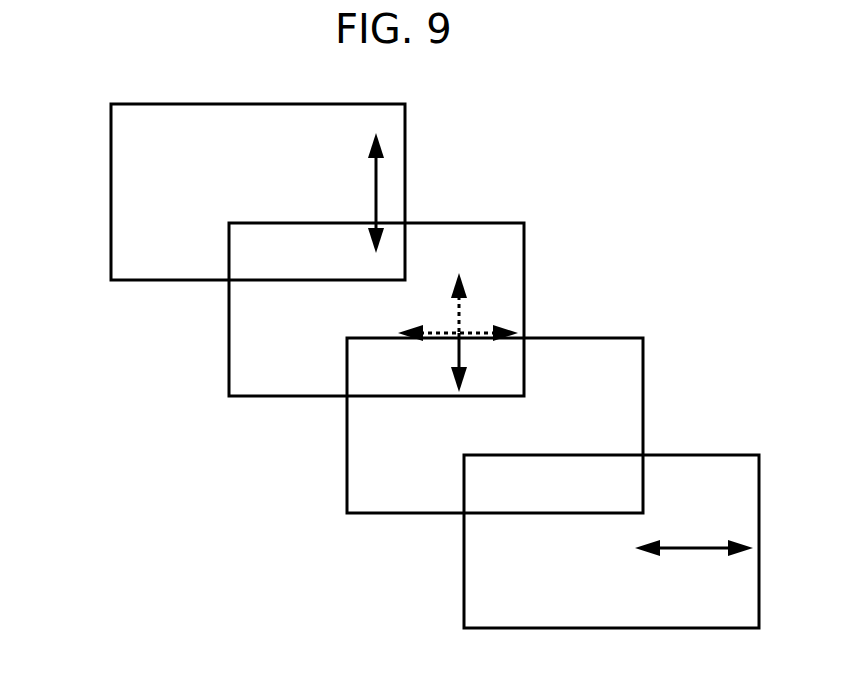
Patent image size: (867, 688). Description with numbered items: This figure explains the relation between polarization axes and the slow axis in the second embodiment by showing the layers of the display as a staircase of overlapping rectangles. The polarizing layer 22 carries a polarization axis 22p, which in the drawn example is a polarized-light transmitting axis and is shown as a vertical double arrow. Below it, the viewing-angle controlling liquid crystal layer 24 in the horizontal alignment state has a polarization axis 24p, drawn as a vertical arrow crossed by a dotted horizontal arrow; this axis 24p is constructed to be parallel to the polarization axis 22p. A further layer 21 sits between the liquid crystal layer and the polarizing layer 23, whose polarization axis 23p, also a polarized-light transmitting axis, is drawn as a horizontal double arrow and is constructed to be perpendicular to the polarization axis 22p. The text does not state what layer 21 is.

The polarizing layer 22 is at (110, 246).
The polarization axis 22p is at (376, 200).
The viewing-angle controlling liquid crystal layer 24 is at (229, 362).
The polarization axis of the viewing-angle controlling liquid crystal layer 24p is at (459, 350).
The first lens group 21 is at (347, 479).
The polarizing layer 23 is at (464, 595).
The polarization axis 23p is at (708, 548).